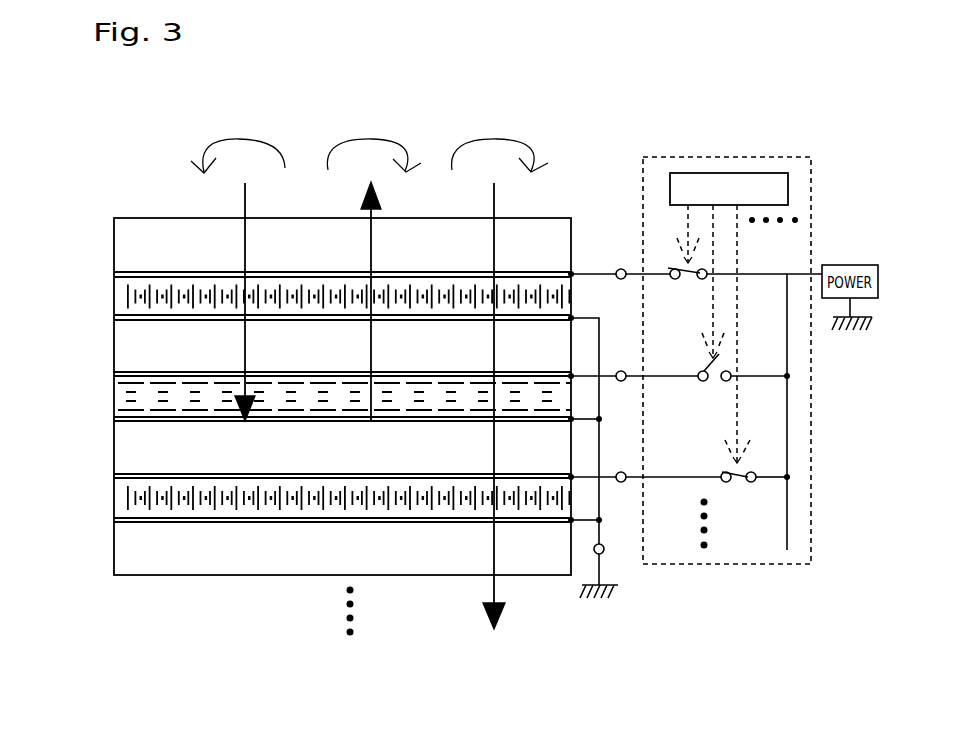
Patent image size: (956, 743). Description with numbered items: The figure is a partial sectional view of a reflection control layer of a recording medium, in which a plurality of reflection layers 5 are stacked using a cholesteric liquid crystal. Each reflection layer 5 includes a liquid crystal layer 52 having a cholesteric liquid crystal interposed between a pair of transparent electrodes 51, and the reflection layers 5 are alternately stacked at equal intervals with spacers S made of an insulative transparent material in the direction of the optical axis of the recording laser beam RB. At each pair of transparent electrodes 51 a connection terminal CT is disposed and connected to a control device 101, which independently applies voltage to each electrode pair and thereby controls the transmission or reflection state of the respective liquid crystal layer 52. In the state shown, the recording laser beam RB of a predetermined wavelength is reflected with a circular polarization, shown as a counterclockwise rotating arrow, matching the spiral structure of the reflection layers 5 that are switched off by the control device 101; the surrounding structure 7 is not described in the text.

The electrode laminate housing 7 is at (122, 243).
The recording laser beam RB is at (365, 207).
The reflection layer 5 is at (287, 395).
The transparent electrode 51 is at (115, 273).
The liquid crystal layer 52 is at (115, 297).
The spacer S is at (122, 337).
The connection terminal CT is at (646, 354).
The control device 101 is at (712, 155).